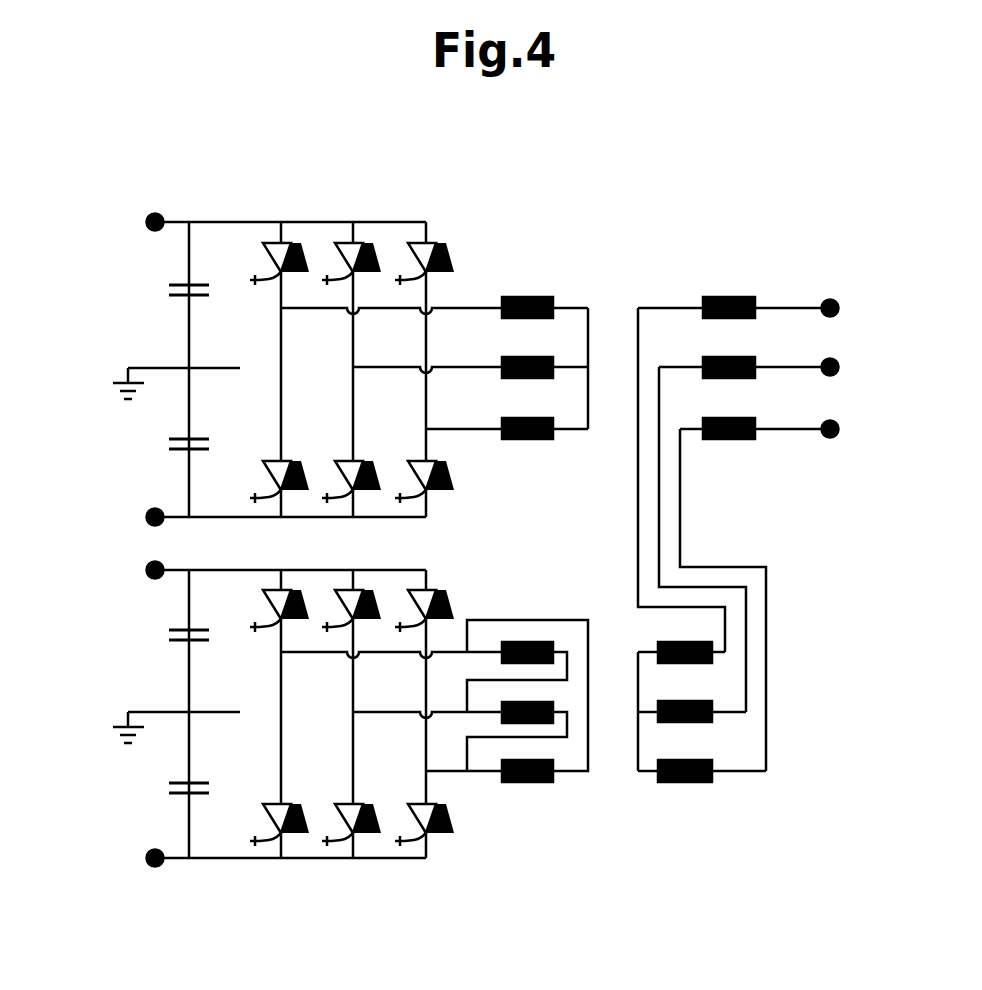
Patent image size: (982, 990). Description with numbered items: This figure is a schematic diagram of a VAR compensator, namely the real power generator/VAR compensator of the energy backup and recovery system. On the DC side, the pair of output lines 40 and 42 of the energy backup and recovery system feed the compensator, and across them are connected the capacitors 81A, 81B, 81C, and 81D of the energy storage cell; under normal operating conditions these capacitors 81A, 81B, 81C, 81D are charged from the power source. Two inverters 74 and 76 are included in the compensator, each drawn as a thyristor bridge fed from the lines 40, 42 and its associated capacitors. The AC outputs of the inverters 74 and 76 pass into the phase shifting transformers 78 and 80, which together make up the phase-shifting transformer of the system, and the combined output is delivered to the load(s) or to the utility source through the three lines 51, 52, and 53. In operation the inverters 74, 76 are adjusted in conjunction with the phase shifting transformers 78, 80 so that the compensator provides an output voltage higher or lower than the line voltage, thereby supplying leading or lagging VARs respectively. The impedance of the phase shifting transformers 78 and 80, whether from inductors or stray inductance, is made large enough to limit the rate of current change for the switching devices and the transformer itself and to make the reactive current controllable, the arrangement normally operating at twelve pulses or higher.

The output line 40 is at (150, 214).
The output line 42 is at (147, 518).
The line 51 is at (836, 300).
The line 52 is at (836, 360).
The line 53 is at (836, 421).
The inverter 74 is at (348, 203).
The inverter 76 is at (358, 886).
The phase shifting transformer 78 is at (753, 288).
The phase shifting transformer 80 is at (710, 802).
The capacitor 81A is at (183, 285).
The capacitor 81B is at (183, 452).
The capacitor 81C is at (183, 630).
The capacitor 81D is at (183, 795).